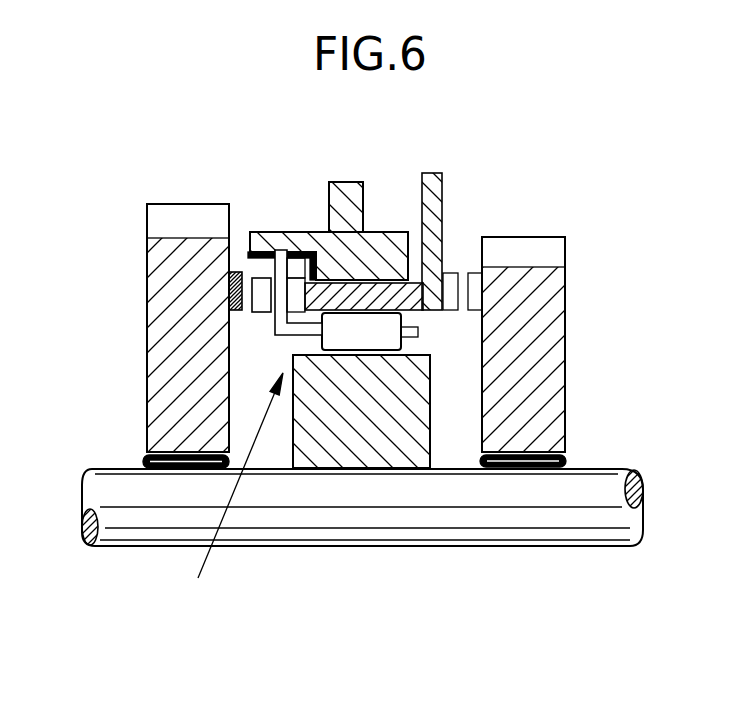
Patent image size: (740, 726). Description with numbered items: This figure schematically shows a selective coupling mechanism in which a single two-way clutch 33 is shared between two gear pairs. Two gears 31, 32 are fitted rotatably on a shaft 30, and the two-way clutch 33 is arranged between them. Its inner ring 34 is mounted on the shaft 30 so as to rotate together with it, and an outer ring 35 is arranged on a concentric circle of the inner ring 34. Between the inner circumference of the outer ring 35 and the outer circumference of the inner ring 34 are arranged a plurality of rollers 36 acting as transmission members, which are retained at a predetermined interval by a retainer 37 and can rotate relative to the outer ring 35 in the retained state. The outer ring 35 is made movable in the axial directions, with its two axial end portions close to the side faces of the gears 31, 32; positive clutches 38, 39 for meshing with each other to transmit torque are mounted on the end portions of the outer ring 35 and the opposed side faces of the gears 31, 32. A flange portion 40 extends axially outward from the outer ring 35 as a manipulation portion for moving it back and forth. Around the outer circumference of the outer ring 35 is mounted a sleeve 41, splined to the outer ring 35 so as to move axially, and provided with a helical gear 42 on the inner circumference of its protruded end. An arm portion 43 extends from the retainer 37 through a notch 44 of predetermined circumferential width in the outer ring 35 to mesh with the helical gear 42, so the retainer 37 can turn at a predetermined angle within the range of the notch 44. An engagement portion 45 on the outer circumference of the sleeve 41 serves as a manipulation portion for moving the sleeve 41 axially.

The shaft 30 is at (557, 530).
The gear 31 is at (565, 370).
The gear 32 is at (162, 370).
The two-way clutch 33 is at (230, 489).
The inner ring 34 is at (392, 433).
The outer ring 35 is at (428, 311).
The rollers 36 is at (348, 338).
The retainer 37 is at (276, 333).
The positive clutch 38 is at (470, 273).
The positive clutch 39 is at (252, 287).
The flange portion 40 is at (433, 173).
The sleeve 41 is at (383, 243).
The helical gear 42 is at (247, 257).
The arm portion 43 is at (277, 268).
The notch 44 is at (257, 313).
The engagement portion 45 is at (343, 183).